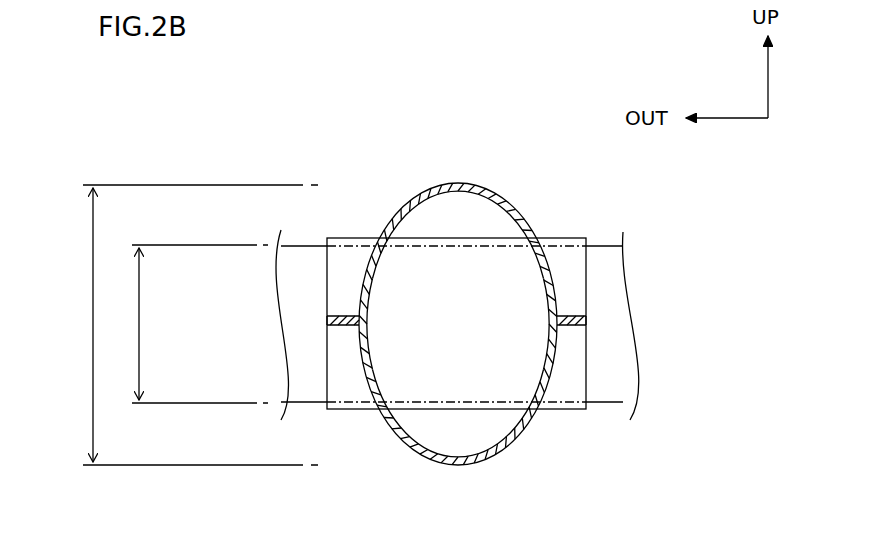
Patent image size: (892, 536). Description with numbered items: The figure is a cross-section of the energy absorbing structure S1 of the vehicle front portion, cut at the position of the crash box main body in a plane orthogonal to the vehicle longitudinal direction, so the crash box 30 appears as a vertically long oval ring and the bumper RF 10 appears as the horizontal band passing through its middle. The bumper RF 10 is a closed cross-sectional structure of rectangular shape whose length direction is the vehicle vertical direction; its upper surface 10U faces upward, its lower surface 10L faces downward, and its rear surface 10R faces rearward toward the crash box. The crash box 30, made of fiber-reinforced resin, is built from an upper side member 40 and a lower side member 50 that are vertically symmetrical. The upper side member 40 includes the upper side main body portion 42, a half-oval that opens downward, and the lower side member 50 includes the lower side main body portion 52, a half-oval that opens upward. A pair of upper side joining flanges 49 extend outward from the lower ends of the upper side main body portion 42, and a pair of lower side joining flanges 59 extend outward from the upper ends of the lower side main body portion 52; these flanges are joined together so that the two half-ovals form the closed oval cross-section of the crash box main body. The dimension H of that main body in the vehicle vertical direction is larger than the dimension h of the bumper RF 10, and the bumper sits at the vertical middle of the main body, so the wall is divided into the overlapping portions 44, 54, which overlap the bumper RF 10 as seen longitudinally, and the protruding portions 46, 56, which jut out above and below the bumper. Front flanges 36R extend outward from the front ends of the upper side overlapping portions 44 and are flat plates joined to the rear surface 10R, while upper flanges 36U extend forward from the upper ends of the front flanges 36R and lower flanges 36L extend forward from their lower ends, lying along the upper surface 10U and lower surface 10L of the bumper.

The bumper RF 10 is at (454, 320).
The upper surface 10U is at (456, 246).
The rear surface 10R is at (475, 326).
The lower surface 10L is at (457, 402).
The crash box 30 is at (441, 297).
The upper flange 36U is at (350, 238).
The lower flange 36L is at (350, 409).
The front flange 36R is at (327, 282).
The upper side member 40 is at (506, 185).
The upper side main body portion 42 is at (409, 189).
The upper side overlapping portion 44 is at (543, 283).
The protruding portion 46 is at (458, 183).
The upper side joining flange 49 is at (341, 315).
The lower side member 50 is at (523, 453).
The lower side main body portion 52 is at (412, 457).
The overlapping portion 54 is at (540, 378).
The protruding portion 56 is at (458, 466).
The lower side joining flange 59 is at (343, 334).
The energy absorbing structure S1 is at (551, 107).
The dimension of the crash box main body H is at (200, 325).
The dimension of the bumper RF h is at (200, 324).